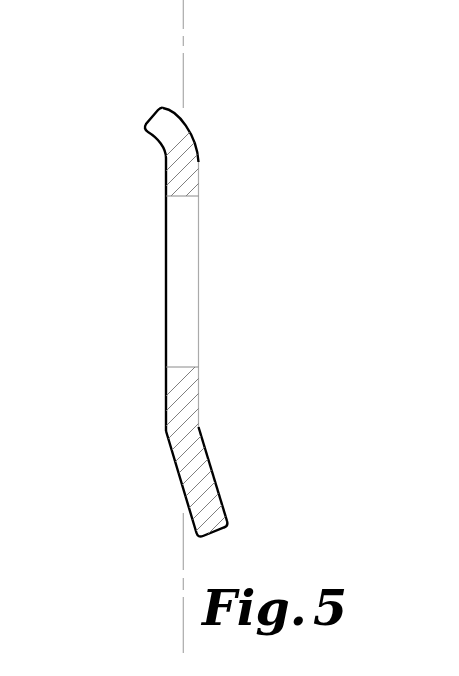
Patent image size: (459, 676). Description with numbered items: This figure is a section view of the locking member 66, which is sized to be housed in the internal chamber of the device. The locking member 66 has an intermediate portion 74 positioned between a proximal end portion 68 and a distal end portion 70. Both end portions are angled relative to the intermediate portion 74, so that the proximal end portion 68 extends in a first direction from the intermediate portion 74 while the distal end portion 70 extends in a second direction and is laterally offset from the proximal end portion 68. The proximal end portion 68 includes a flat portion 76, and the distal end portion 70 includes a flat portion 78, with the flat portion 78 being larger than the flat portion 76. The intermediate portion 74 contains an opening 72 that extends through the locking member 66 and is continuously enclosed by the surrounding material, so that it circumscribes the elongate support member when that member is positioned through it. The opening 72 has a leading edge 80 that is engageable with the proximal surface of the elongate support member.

The locking member 66 is at (186, 331).
The proximal end portion 68 is at (184, 173).
The distal end portion 70 is at (222, 464).
The opening 72 is at (193, 367).
The intermediate portion 74 is at (166, 320).
The flat portion 76 is at (187, 122).
The flat portion 78 is at (220, 493).
The leading edge 80 is at (193, 197).